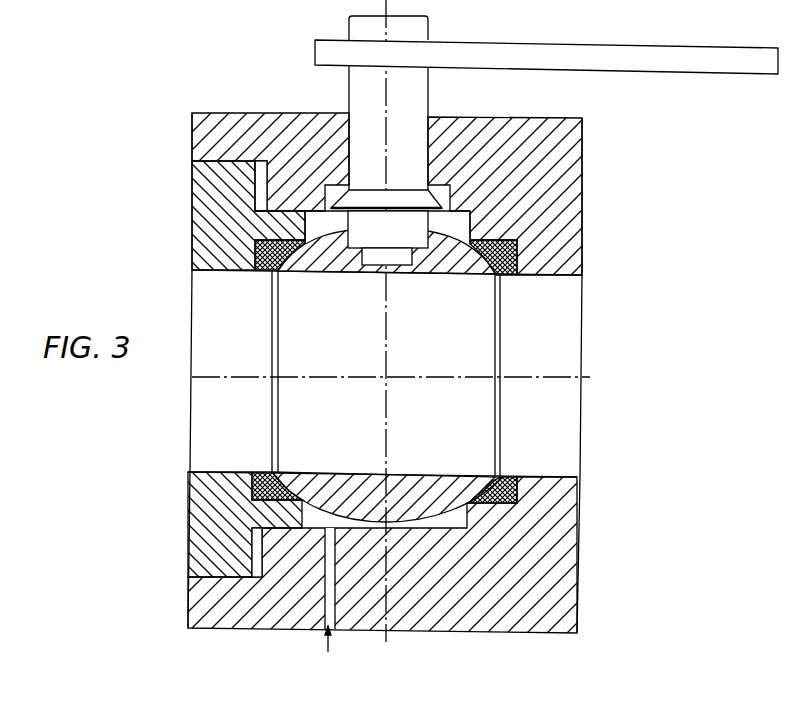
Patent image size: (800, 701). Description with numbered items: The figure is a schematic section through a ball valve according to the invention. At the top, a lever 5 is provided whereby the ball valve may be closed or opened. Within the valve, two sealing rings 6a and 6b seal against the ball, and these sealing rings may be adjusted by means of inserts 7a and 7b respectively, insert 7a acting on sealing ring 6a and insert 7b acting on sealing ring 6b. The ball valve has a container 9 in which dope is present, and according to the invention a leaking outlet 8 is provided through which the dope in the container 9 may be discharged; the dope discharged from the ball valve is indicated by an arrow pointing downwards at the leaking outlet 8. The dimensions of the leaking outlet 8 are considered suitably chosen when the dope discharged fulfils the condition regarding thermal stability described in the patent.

The lever 5 is at (663, 55).
The sealing ring 6a is at (507, 280).
The sealing ring 6b is at (508, 477).
The insert 7a is at (212, 205).
The insert 7b is at (217, 517).
The leaking outlet 8 is at (325, 633).
The container 9 is at (447, 518).